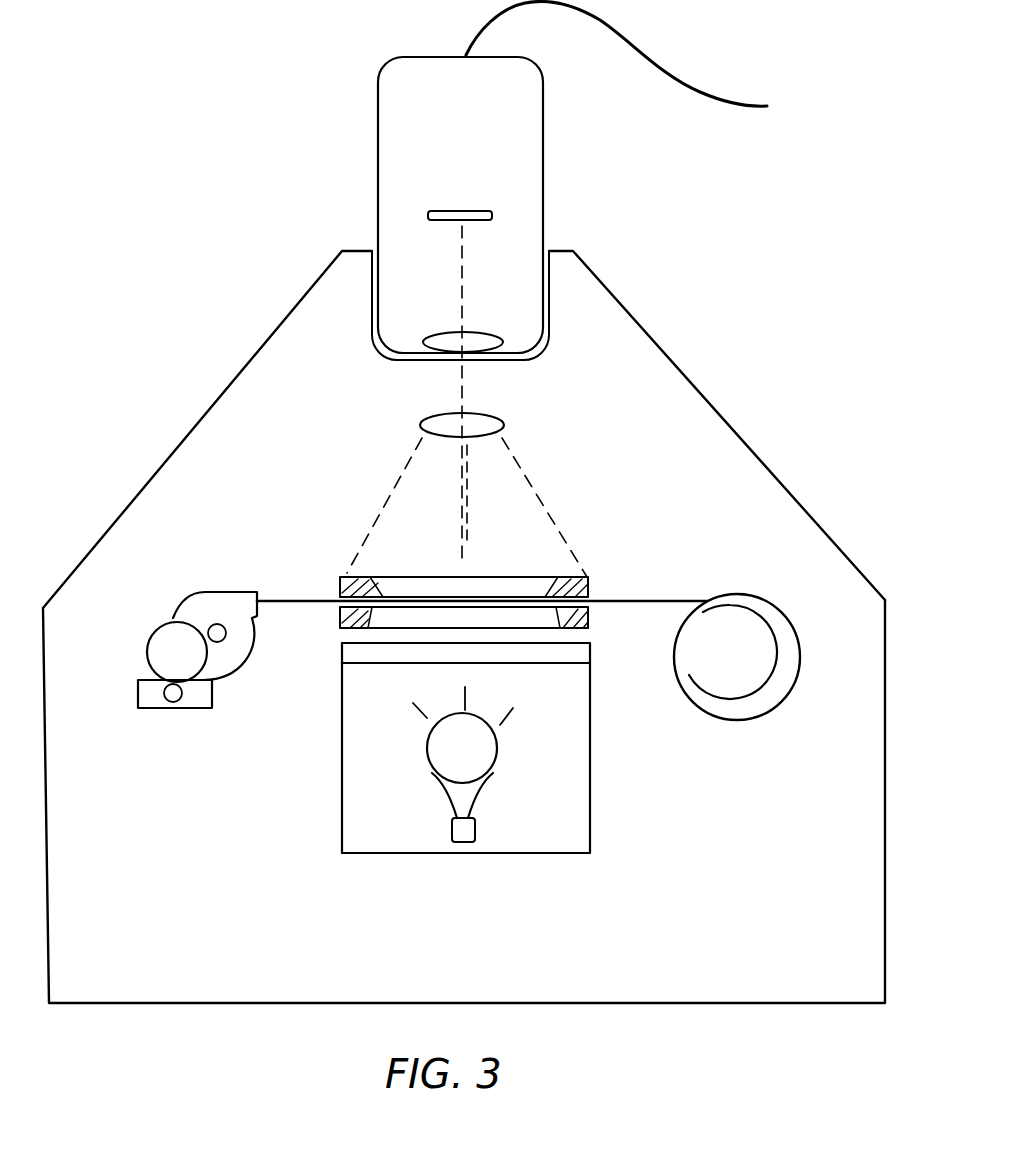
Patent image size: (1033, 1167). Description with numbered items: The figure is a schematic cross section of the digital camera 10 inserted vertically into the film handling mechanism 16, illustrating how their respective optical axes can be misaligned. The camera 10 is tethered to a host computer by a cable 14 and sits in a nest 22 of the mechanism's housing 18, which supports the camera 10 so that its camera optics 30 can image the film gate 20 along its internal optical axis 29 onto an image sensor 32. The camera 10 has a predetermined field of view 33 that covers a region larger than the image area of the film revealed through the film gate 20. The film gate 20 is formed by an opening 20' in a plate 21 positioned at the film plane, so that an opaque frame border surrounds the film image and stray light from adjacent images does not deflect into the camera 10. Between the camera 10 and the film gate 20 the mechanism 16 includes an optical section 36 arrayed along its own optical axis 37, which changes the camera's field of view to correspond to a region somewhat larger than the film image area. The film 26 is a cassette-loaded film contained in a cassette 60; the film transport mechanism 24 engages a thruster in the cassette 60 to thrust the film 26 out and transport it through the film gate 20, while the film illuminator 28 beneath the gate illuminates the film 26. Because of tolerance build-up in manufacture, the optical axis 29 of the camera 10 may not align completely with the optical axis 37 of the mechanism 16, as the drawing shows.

The digital camera 10 is at (543, 150).
The cable 14 is at (700, 91).
The film handling mechanism 16 is at (205, 403).
The housing 18 is at (760, 462).
The film gate 20 is at (479, 540).
The opening 20' is at (497, 575).
The plate 21 is at (588, 587).
The nest 22 is at (370, 288).
The film transport mechanism 24 is at (137, 695).
The film 26 is at (298, 607).
The film illuminator 28 is at (592, 820).
The optical axis 29 is at (470, 506).
The camera optics 30 is at (488, 335).
The image sensor 32 is at (475, 210).
The field of view 33 is at (417, 458).
The optical section 36 is at (505, 415).
The optical axis 37 is at (460, 535).
The cassette 60 is at (203, 592).